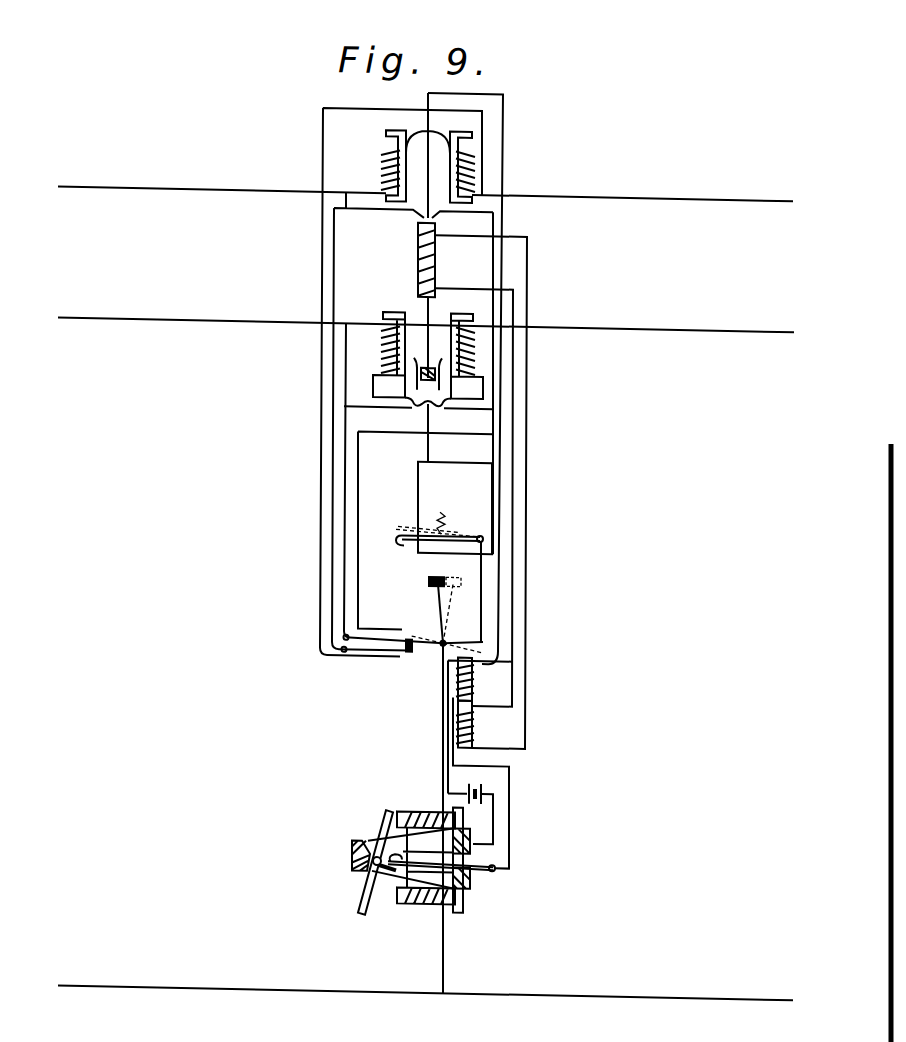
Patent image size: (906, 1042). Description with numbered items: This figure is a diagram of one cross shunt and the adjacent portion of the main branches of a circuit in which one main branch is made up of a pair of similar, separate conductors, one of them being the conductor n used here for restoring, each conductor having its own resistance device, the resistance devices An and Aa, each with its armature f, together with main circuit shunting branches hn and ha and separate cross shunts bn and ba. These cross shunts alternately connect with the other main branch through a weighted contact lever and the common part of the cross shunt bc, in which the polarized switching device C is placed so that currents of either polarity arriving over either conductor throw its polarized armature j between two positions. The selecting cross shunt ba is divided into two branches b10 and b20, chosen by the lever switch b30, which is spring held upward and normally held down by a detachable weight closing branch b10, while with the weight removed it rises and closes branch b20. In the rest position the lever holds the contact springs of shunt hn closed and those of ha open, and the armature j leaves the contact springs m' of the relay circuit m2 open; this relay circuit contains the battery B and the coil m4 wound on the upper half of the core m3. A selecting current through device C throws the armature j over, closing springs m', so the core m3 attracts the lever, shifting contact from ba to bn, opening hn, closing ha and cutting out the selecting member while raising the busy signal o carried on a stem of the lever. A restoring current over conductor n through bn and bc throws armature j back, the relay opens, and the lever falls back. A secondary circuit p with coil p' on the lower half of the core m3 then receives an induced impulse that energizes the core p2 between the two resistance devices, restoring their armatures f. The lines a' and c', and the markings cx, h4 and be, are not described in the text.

The conductor n is at (425, 184).
The line wire a' is at (426, 337).
The line wire c' is at (425, 1005).
The resistance device An is at (387, 143).
The cross shunt bn is at (501, 165).
The armature f is at (430, 160).
The core p2 is at (418, 253).
The secondary circuit p is at (491, 492).
The resistance device Aa is at (418, 351).
The main circuit shunting branch hn is at (333, 450).
The main circuit shunting branch ha is at (344, 545).
The cross shunt ba is at (428, 440).
The branch b20 is at (418, 492).
The branch b10 is at (455, 508).
The lever switch b30 is at (404, 544).
The busy signal o is at (435, 610).
The pivot contact c^x cx is at (446, 815).
The contact spring h^4 h4 is at (410, 650).
The wire b^e be is at (458, 682).
The coil m4 is at (482, 680).
The core m3 is at (470, 702).
The coil p' is at (487, 738).
The battery B is at (488, 790).
The relay circuit m2 is at (493, 827).
The contact springs m' is at (440, 870).
The polarized switching device C is at (442, 859).
The polarized armature j is at (390, 823).
The part of the cross shunt bc is at (443, 960).